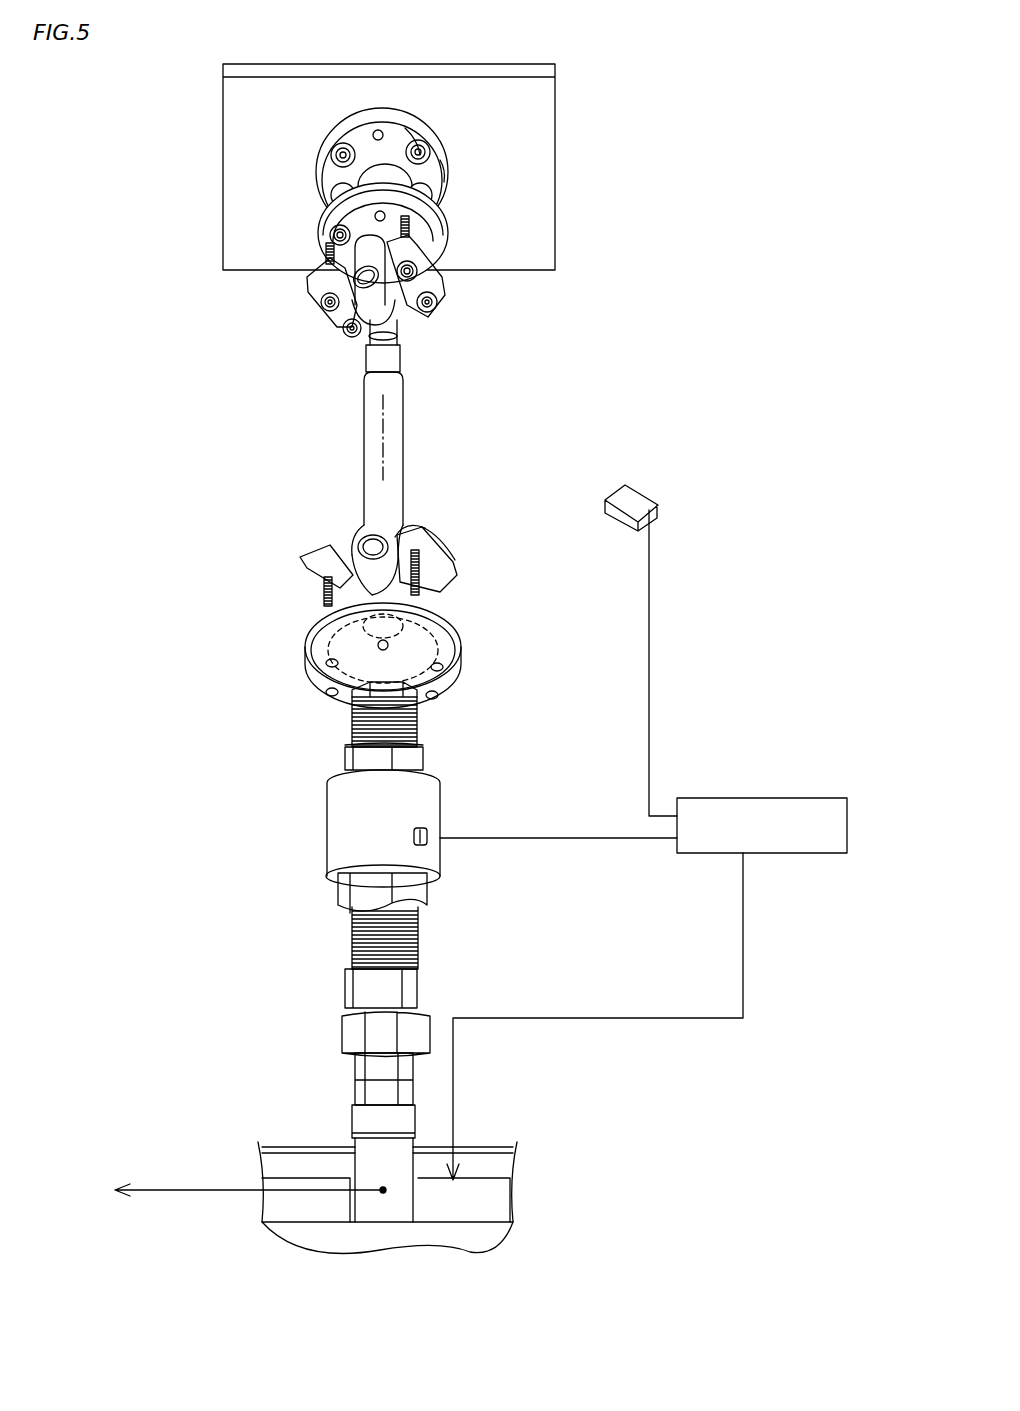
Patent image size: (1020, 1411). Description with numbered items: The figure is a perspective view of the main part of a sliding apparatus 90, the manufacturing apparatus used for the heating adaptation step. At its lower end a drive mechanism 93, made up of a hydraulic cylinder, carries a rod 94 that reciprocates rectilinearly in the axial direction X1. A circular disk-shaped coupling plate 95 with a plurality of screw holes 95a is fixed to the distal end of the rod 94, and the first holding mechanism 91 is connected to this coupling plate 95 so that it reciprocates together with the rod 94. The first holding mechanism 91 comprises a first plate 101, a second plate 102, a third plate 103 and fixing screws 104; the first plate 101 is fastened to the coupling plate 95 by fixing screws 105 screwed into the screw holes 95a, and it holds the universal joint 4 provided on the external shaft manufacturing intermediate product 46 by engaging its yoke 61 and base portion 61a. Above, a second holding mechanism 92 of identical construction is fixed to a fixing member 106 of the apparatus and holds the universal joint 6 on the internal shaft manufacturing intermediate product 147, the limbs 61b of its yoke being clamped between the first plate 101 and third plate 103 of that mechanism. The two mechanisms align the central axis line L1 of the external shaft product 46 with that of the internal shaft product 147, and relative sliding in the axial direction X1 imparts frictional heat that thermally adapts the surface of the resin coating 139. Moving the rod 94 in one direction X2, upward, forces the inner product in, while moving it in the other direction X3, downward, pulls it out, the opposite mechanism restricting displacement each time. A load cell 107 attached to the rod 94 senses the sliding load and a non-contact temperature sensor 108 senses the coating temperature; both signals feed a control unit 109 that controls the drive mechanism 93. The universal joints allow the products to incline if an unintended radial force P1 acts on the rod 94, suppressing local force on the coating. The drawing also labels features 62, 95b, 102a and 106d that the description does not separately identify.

The sliding apparatus 90 is at (608, 276).
The yoke 61 is at (366, 236).
The base portion 61a is at (380, 240).
The limbs 61b is at (323, 256).
The fixing member 106 is at (433, 170).
The second holding mechanism 92 is at (466, 233).
The first plate 101 is at (337, 213).
The fixing screws 104 is at (365, 257).
The third plate 103 is at (307, 283).
The second plate 102 is at (340, 312).
The fixing screws 105 is at (430, 275).
The shaft end 62 is at (410, 326).
The internal shaft manufacturing intermediate product 147 is at (390, 354).
The resin coating 139 is at (395, 373).
The external shaft manufacturing intermediate product 46 is at (395, 423).
The universal joint 6 is at (368, 300).
The central axis line L1 is at (378, 452).
The clamp arm face 102a is at (405, 515).
The universal joint 4 is at (428, 535).
The first holding mechanism 91 is at (414, 670).
The coupling plate 95 is at (440, 668).
The screw holes 95a is at (326, 666).
The flange hole 95b is at (418, 645).
The plate portion 106d is at (452, 625).
The load cell 107 is at (427, 838).
The temperature sensor 108 is at (630, 497).
The control unit 109 is at (743, 798).
The drive mechanism 93 is at (494, 1166).
The rod 94 is at (400, 1205).
The radial force P1 is at (170, 1190).
The axial direction X1 is at (282, 840).
The one direction X2 is at (224, 850).
The other direction X3 is at (247, 847).